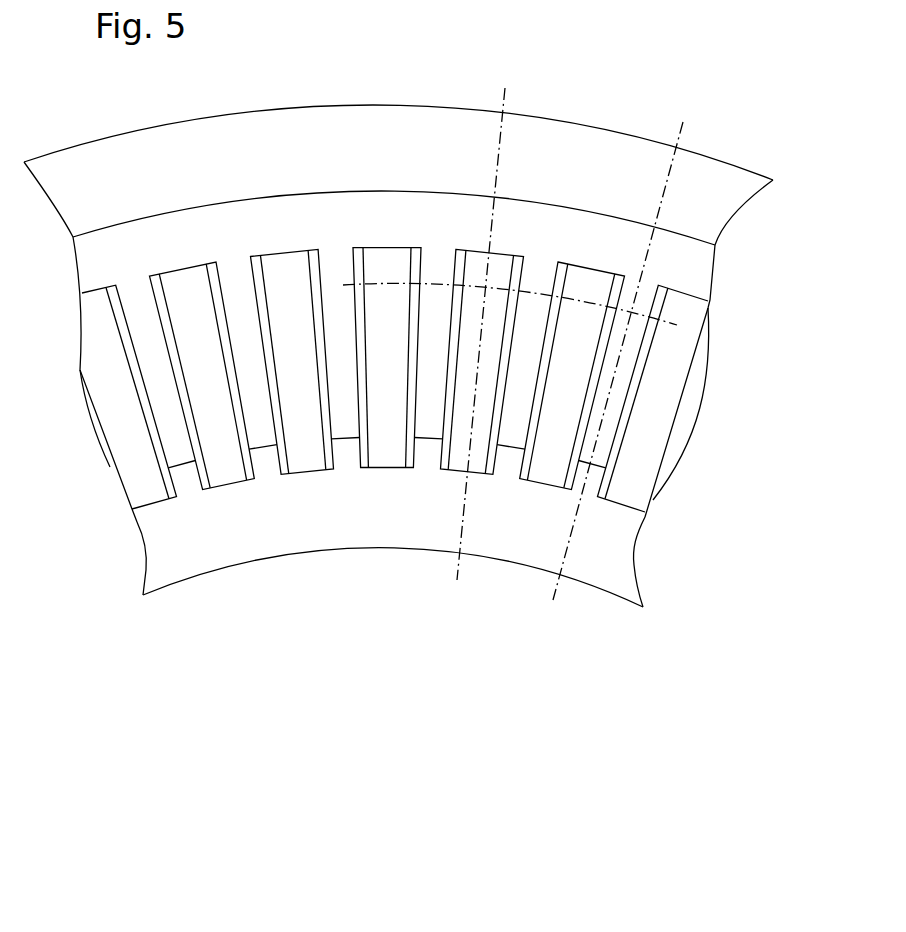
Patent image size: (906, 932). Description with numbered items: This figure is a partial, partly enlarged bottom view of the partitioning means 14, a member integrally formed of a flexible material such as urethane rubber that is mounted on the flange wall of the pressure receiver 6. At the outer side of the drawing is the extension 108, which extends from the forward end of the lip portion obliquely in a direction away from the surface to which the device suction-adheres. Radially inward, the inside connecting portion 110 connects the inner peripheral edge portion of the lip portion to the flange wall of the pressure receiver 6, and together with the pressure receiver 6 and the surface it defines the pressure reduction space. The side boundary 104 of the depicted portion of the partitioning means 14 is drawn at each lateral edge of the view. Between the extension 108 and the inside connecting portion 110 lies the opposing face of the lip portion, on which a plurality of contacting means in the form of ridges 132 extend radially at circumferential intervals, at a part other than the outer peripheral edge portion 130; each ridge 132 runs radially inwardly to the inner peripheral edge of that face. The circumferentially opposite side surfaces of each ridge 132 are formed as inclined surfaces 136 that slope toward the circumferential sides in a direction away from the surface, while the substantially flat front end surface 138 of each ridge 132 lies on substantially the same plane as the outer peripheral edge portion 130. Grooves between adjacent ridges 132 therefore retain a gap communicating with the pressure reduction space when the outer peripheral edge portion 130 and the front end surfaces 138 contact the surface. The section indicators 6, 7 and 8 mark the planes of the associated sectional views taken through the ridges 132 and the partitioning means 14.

The partitioning means 14 is at (368, 566).
The side face of core segment 104 is at (692, 456).
The extension 108 is at (587, 152).
The inside connecting portion 110 is at (623, 603).
The outer peripheral edge portion 130 is at (697, 273).
The ridge 132 is at (273, 306).
The inclined surface 136 is at (222, 310).
The front end surface 138 is at (238, 288).
The pressure receiver 6 is at (343, 285).
The section line 7- 7 is at (505, 88).
The section line 8- 8 is at (683, 122).